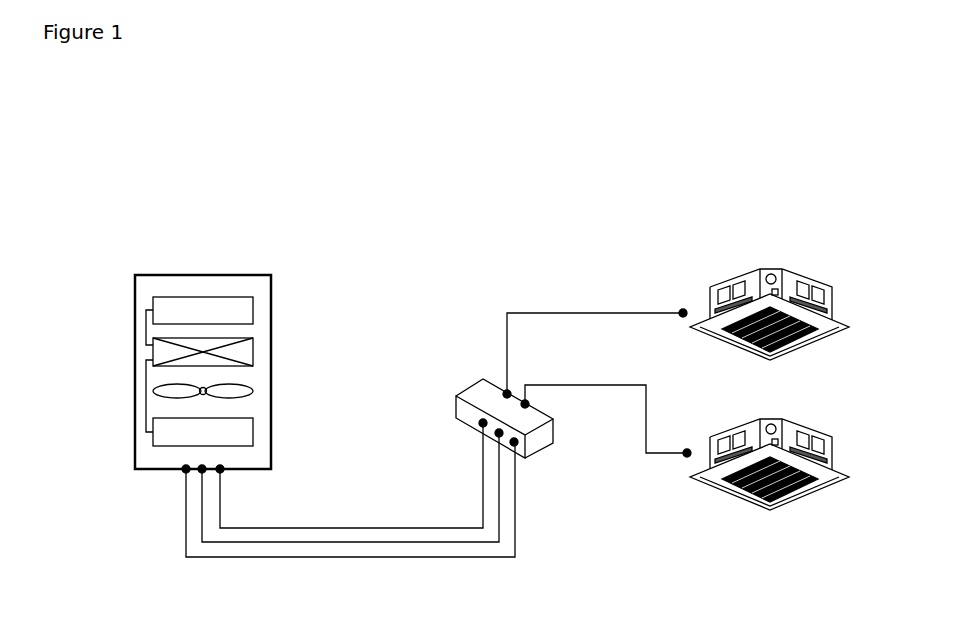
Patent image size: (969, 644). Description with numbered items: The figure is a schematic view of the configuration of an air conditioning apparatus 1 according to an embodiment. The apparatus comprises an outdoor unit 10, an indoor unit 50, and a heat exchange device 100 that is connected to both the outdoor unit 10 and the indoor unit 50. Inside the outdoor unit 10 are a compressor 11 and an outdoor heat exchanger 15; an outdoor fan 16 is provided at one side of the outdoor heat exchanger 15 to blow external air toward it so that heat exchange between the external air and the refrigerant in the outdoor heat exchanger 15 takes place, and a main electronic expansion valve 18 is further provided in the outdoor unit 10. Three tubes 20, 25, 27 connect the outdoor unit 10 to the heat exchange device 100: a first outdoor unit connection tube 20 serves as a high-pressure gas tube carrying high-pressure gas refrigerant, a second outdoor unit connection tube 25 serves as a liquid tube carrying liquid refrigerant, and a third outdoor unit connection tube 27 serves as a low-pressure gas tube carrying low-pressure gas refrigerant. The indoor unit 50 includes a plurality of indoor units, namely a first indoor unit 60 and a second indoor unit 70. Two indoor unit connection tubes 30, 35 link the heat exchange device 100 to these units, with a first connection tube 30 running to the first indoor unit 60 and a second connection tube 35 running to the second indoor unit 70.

The air conditioning apparatus 1 is at (474, 193).
The outdoor unit 10 is at (217, 266).
The compressor 11 is at (253, 309).
The outdoor heat exchanger 15 is at (253, 351).
The outdoor fan 16 is at (253, 392).
The main electronic expansion valve 18 is at (253, 434).
The first outdoor unit connection tube 20 is at (317, 527).
The second outdoor unit connection tube 25 is at (345, 542).
The third outdoor unit connection tube 27 is at (402, 557).
The first connection tube 30 is at (598, 313).
The second connection tube 35 is at (598, 385).
The indoor unit 50 is at (769, 280).
The first indoor unit 60 is at (803, 345).
The second indoor unit 70 is at (803, 490).
The heat exchange device 100 is at (458, 377).